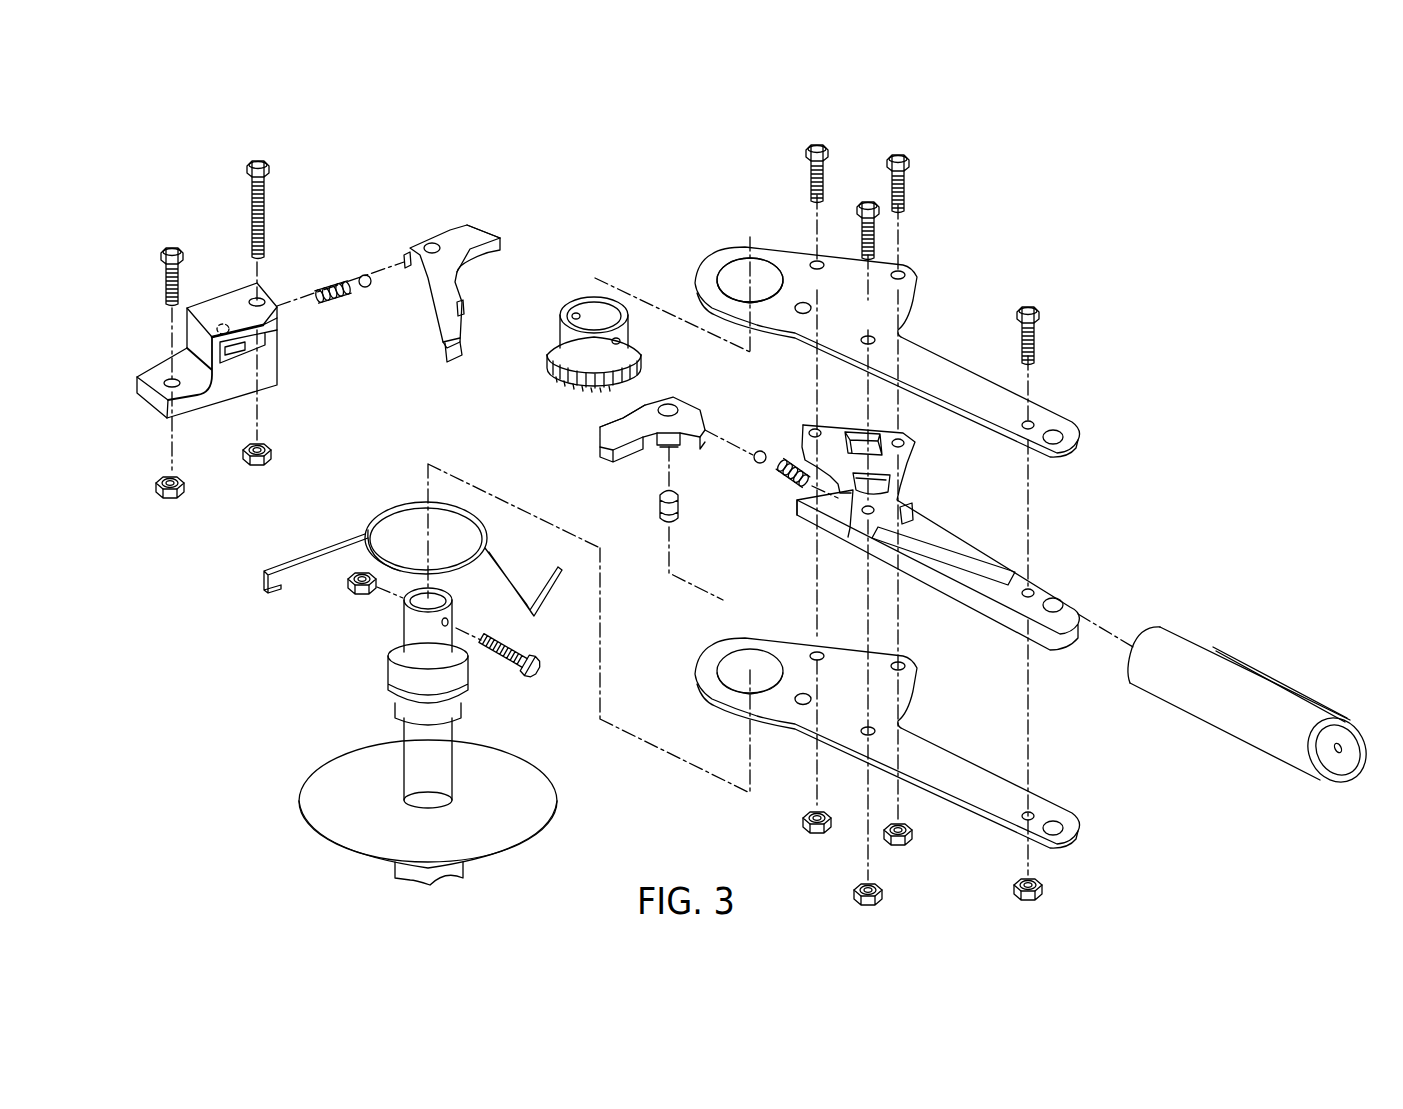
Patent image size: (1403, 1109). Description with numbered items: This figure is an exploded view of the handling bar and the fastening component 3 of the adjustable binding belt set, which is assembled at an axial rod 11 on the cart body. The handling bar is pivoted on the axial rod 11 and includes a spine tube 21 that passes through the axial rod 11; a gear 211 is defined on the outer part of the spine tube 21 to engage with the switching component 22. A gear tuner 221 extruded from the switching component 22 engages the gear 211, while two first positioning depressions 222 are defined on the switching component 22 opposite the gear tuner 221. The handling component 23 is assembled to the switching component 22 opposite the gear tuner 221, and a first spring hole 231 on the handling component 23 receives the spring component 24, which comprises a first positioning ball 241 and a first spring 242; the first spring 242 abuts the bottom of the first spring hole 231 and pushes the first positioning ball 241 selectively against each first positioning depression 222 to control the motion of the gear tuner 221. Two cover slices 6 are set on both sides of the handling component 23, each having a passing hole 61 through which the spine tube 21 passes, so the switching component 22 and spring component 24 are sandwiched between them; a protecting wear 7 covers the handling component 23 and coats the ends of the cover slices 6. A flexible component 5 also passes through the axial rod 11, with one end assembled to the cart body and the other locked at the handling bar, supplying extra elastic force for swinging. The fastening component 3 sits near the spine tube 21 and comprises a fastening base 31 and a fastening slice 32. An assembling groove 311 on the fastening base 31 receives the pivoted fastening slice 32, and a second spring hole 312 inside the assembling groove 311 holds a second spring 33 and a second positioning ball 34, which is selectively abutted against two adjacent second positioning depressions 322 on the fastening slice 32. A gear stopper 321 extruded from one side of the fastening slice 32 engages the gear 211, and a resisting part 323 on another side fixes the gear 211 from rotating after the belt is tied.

The fastening component 3 is at (240, 482).
The flexible component 5 is at (277, 595).
The cover slice 6 is at (898, 306).
The protecting wear 7 is at (1230, 672).
The axial rod 11 is at (415, 632).
The spine tube 21 is at (567, 332).
The gear 211 is at (553, 375).
The switching component 22 is at (587, 450).
The gear tuner 221 is at (620, 405).
The first positioning depression 222 is at (660, 447).
The handling component 23 is at (1040, 588).
The first spring hole 231 is at (860, 505).
The spring component 24 is at (760, 560).
The first positioning ball 241 is at (755, 465).
The first spring 242 is at (785, 490).
The fastening base 31 is at (253, 380).
The assembling groove 311 is at (253, 342).
The second spring hole 312 is at (223, 322).
The fastening slice 32 is at (482, 222).
The gear stopper 321 is at (468, 305).
The second positioning depression 322 is at (407, 273).
The resisting part 323 is at (510, 240).
The second spring 33 is at (327, 287).
The second positioning ball 34 is at (365, 274).
The passing hole 61 is at (729, 289).